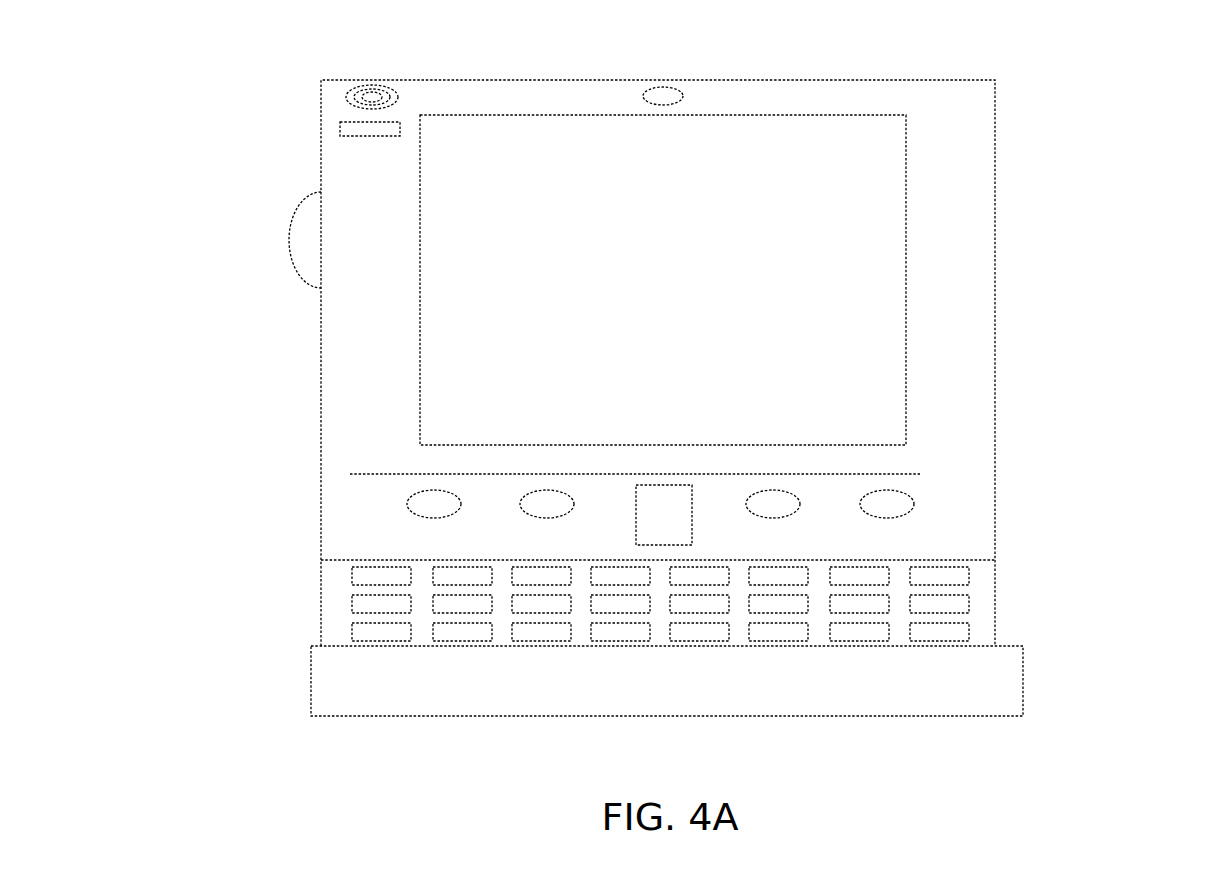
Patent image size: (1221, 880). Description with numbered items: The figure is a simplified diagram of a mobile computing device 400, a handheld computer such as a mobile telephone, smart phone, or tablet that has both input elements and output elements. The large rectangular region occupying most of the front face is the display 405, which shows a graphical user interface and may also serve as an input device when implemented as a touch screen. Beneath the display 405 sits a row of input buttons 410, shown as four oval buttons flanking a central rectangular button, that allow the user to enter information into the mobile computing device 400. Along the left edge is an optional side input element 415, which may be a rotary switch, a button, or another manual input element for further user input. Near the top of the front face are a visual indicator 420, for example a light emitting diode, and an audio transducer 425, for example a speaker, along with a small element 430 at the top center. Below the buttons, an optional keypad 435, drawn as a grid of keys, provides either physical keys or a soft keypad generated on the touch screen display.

The mobile computing device 400 is at (980, 92).
The display 405 is at (572, 389).
The input buttons 410 is at (660, 522).
The side input element 415 is at (310, 241).
The visual indicator 420 is at (340, 134).
The audio transducer 425 is at (340, 98).
The sensor 430 is at (683, 96).
The keypad 435 is at (333, 637).